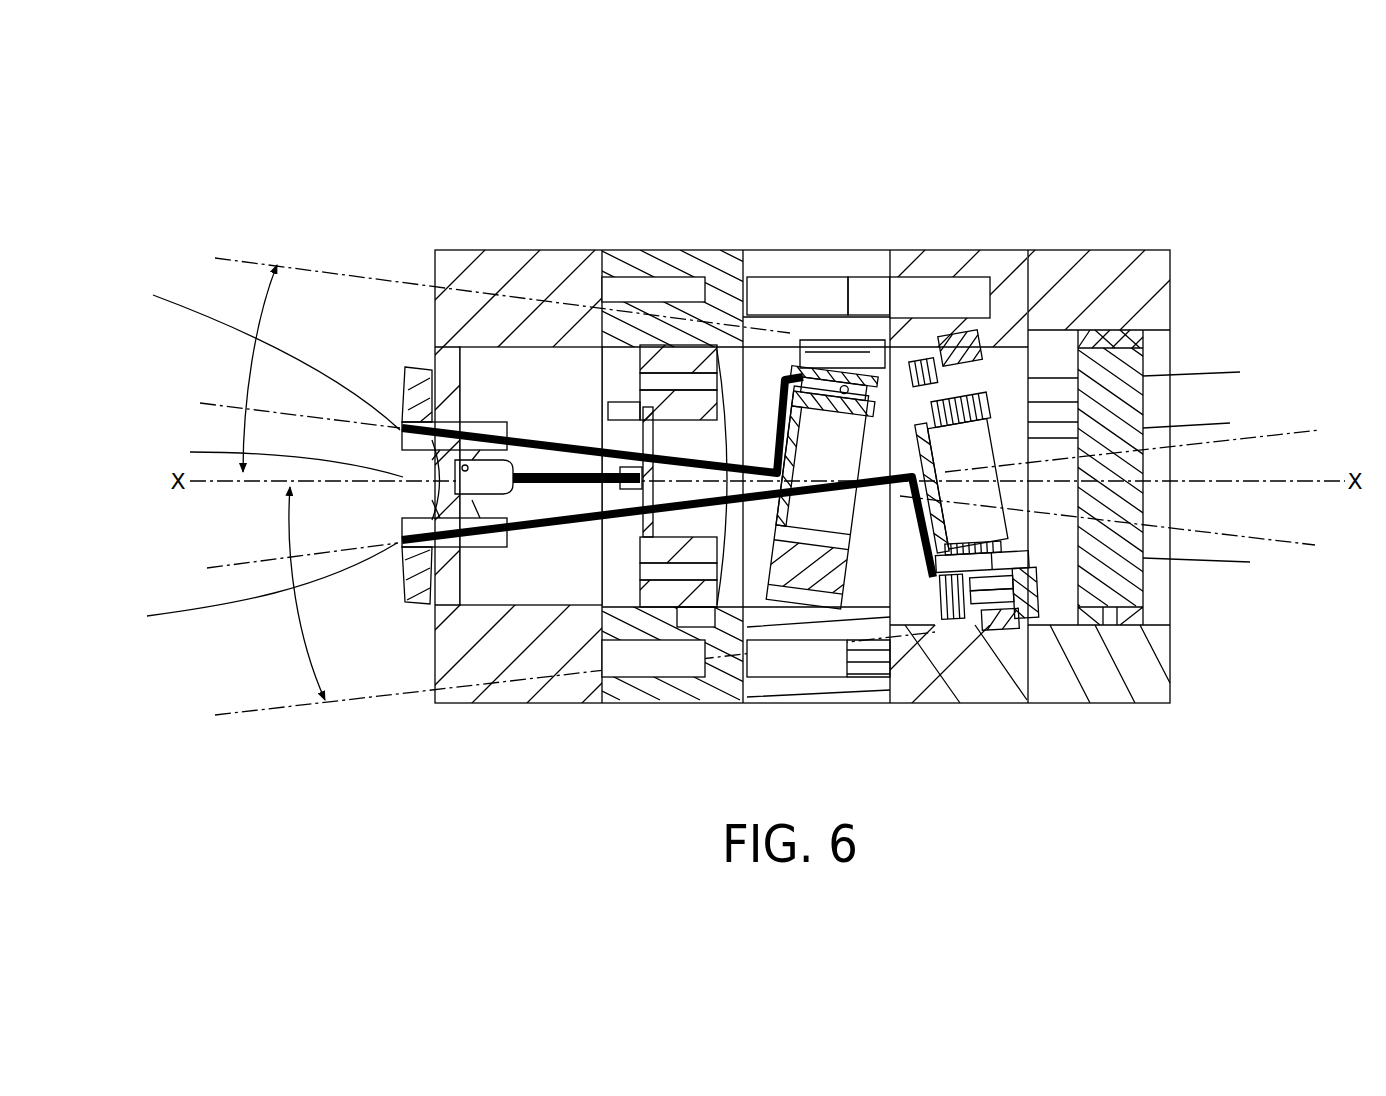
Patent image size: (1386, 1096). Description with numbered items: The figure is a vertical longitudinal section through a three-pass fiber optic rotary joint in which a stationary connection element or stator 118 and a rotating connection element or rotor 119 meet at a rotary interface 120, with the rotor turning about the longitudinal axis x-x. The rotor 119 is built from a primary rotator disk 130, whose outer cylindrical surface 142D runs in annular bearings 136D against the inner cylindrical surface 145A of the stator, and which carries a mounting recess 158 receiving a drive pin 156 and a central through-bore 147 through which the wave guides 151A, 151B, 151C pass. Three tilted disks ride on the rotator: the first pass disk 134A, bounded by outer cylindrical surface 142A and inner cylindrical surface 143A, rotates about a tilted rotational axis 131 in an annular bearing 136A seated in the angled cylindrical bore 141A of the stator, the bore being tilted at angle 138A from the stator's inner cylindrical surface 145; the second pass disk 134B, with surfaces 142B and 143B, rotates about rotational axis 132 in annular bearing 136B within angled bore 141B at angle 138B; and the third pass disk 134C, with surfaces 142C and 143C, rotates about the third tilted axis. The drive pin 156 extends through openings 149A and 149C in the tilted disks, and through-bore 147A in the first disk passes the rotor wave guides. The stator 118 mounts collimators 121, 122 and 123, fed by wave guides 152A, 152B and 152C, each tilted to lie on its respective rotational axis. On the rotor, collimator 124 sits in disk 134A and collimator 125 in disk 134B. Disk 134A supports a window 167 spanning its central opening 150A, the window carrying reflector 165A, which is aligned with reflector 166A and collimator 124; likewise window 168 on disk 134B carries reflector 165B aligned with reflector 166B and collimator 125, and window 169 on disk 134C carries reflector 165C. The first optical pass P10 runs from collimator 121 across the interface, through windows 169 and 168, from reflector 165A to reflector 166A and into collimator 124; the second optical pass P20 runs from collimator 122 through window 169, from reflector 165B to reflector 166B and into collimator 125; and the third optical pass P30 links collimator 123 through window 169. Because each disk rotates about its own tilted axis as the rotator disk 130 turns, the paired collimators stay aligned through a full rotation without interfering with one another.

The stationary connection element 118 is at (437, 237).
The rotating connection element 119 is at (1163, 362).
The rotary interface 120 is at (556, 426).
The collimator 121 is at (476, 560).
The collimator 122 is at (478, 412).
The collimator 123 is at (400, 513).
The collimator 124 is at (1007, 634).
The collimator 125 is at (835, 342).
The primary rotator disk 130 is at (1152, 393).
The rotational axis 131 is at (243, 570).
The rotational axis 132 is at (365, 418).
The first pass disk 134A is at (948, 615).
The second pass disk 134B is at (936, 343).
The third pass disk 134C is at (668, 395).
The annular bearing 136A is at (1025, 610).
The annular bearing 136B is at (822, 618).
The annular bearings 136D is at (1128, 625).
The angle 138A is at (290, 520).
The angle 138B is at (245, 433).
The angled cylindrical bore 141A is at (1095, 625).
The angled cylindrical bore 141B is at (892, 356).
The outer cylindrical surface 142A is at (997, 398).
The outer cylindrical surface 142B is at (980, 351).
The outer cylindrical surface 142C is at (692, 600).
The outer cylindrical surface 142D is at (1153, 328).
The inner cylindrical surface 143A is at (1143, 463).
The inner cylindrical surface 143B is at (826, 523).
The inner cylindrical surface 143C is at (784, 384).
The inner cylindrical surface 145 is at (530, 355).
The inner cylindrical surface 145A is at (1158, 340).
The through-bore 147 is at (996, 493).
The through-bore 147A is at (1006, 383).
The opening 149A is at (1037, 401).
The opening 149C is at (728, 408).
The central opening 150A is at (953, 520).
The wave guide 151A is at (1199, 570).
The wave guide 151B is at (1209, 372).
The wave guide 151C is at (1210, 421).
The wave guide 152A is at (253, 612).
The wave guide 152B is at (211, 327).
The wave guide 152C is at (288, 455).
The drive pin 156 is at (621, 395).
The mounting recess 158 is at (1110, 335).
The reflector 165A is at (993, 371).
The reflector 165B is at (745, 605).
The reflector 165C is at (627, 497).
The reflector 166A is at (950, 580).
The reflector 166B is at (808, 371).
The window 167 is at (962, 583).
The window 168 is at (805, 430).
The window 169 is at (628, 438).
The first optical pass P10 is at (550, 533).
The second optical pass P20 is at (790, 355).
The third optical pass P30 is at (540, 492).